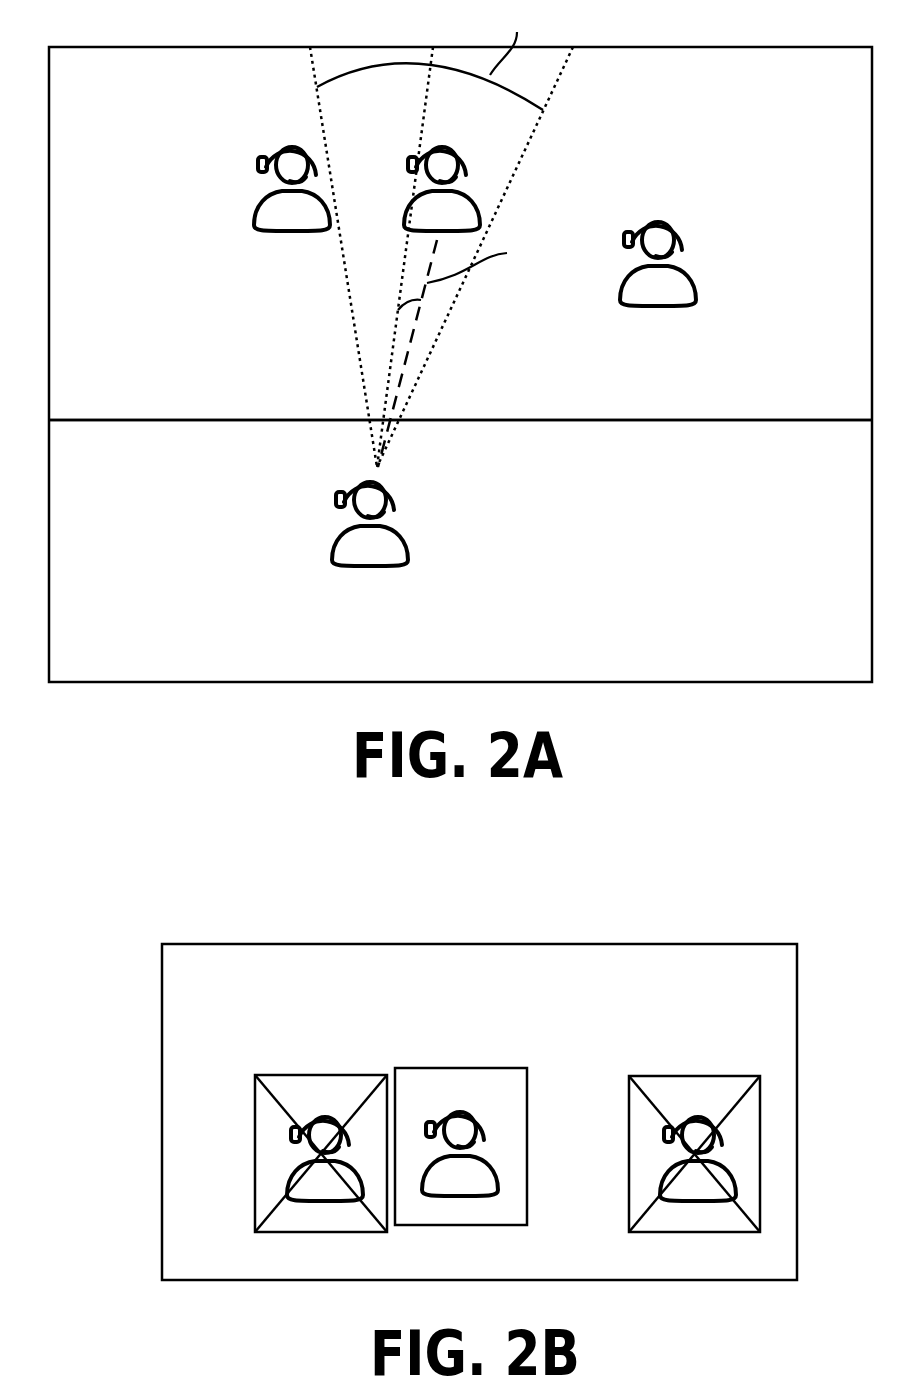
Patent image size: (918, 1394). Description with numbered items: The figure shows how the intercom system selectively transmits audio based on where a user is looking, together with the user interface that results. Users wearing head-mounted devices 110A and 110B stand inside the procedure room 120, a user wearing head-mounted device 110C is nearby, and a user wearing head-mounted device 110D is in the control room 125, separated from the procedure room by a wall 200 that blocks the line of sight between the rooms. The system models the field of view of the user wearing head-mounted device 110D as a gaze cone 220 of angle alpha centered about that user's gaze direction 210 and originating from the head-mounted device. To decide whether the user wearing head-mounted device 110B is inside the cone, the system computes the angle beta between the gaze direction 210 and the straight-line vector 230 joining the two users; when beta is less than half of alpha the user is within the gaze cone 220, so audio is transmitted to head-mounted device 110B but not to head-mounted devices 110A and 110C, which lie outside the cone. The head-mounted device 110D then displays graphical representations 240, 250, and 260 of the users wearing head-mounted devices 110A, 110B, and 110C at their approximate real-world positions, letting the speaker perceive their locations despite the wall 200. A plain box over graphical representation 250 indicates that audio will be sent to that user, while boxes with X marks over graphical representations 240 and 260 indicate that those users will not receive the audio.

In FIG. 2A, the head-mounted device 110A is at (272, 240).
In FIG. 2A, the head-mounted device 110B is at (467, 157).
In FIG. 2A, the head-mounted device 110C is at (675, 212).
In FIG. 2A, the head-mounted device 110D is at (356, 572).
In FIG. 2A, the procedure room 120 is at (460, 371).
In FIG. 2A, the control room 125 is at (460, 474).
In FIG. 2A, the wall 200 is at (678, 421).
In FIG. 2A, the gaze direction 210 is at (385, 362).
In FIG. 2A, the gaze cone 220 is at (564, 68).
In FIG. 2A, the straight-line vector 230 is at (412, 342).
In FIG. 2B, the graphical representation 240 is at (318, 1107).
In FIG. 2B, the graphical representation 250 is at (470, 1097).
In FIG. 2B, the graphical representation 260 is at (708, 1108).